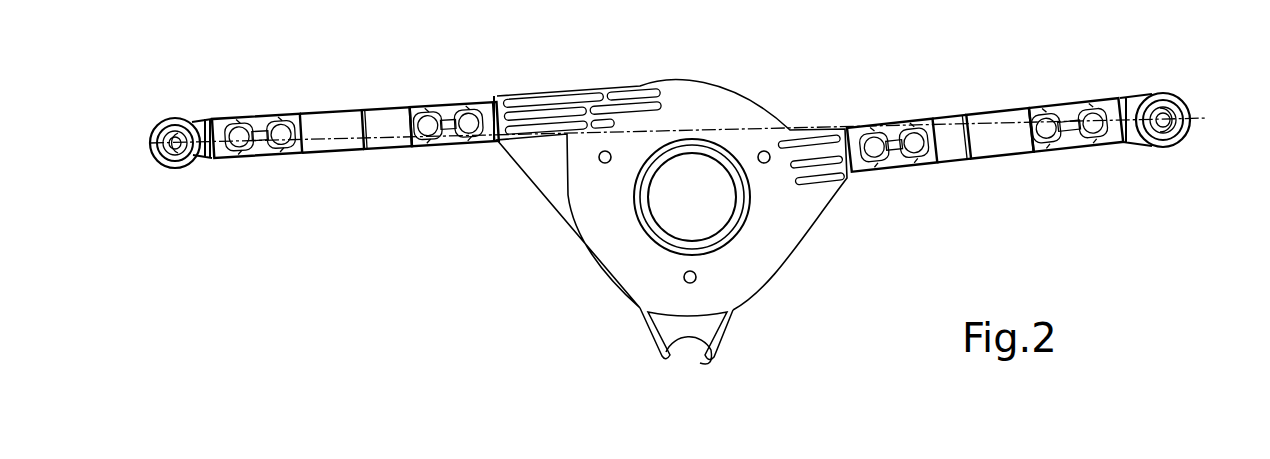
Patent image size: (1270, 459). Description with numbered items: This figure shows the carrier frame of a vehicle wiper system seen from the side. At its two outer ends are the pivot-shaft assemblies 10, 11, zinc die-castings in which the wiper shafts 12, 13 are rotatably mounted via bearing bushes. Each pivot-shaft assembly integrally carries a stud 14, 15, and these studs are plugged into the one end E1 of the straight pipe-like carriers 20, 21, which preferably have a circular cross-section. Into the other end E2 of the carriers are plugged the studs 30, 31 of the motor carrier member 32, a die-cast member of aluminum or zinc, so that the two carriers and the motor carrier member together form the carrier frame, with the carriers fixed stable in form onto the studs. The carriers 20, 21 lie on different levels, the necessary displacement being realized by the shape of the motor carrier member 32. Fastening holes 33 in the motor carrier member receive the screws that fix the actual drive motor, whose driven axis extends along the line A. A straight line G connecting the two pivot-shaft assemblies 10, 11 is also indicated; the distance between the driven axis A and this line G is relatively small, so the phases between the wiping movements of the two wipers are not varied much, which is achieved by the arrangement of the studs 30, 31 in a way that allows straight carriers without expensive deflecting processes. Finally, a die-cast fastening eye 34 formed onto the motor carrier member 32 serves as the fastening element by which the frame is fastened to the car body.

The pivot-shaft assembly 10 is at (207, 121).
The pivot-shaft assembly 11 is at (1120, 108).
The wiper shaft 12 is at (182, 128).
The wiper shaft 13 is at (1183, 112).
The stud 14 is at (236, 117).
The stud 15 is at (1108, 118).
The pipe-like carrier 20 is at (385, 114).
The pipe-like carrier 21 is at (998, 124).
The stud 30 is at (487, 110).
The stud 31 is at (858, 138).
The motor carrier member 32 is at (740, 100).
The fastening holes 33 is at (598, 161).
The fastening eye 34 is at (719, 364).
The driven axis A is at (692, 197).
The straight line G is at (689, 124).
The one end of the pipe-like carriers E1 is at (277, 189).
The other end of the pipe-like carriers E2 is at (466, 184).